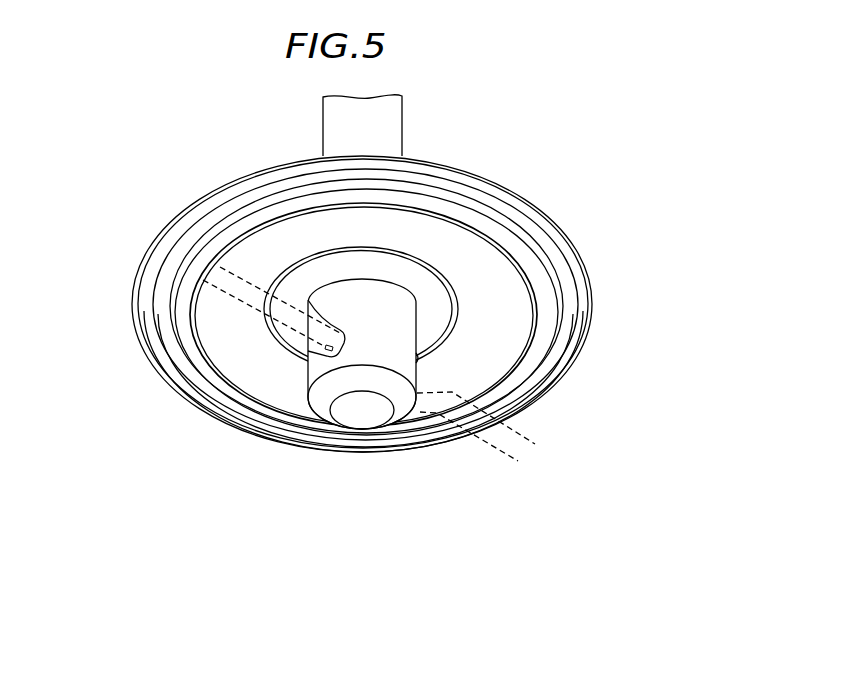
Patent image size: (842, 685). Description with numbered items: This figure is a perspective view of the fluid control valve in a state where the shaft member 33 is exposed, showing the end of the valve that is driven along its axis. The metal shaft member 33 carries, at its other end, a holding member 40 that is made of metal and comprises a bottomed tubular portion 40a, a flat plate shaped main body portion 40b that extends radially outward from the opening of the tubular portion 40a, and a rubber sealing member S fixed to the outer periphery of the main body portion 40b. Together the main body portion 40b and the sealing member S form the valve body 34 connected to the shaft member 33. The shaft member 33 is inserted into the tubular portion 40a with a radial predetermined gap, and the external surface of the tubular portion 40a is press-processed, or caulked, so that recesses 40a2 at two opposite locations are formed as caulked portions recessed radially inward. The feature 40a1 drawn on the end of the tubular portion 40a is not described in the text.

The sealing member S is at (146, 260).
The shaft member 33 is at (406, 131).
The valve body 34 is at (605, 238).
The holding member 40 is at (422, 343).
The tubular portion 40a is at (369, 357).
The center hole of boss 40a1 is at (362, 418).
The recesses 40a2 is at (327, 297).
The main body portion 40b is at (488, 343).